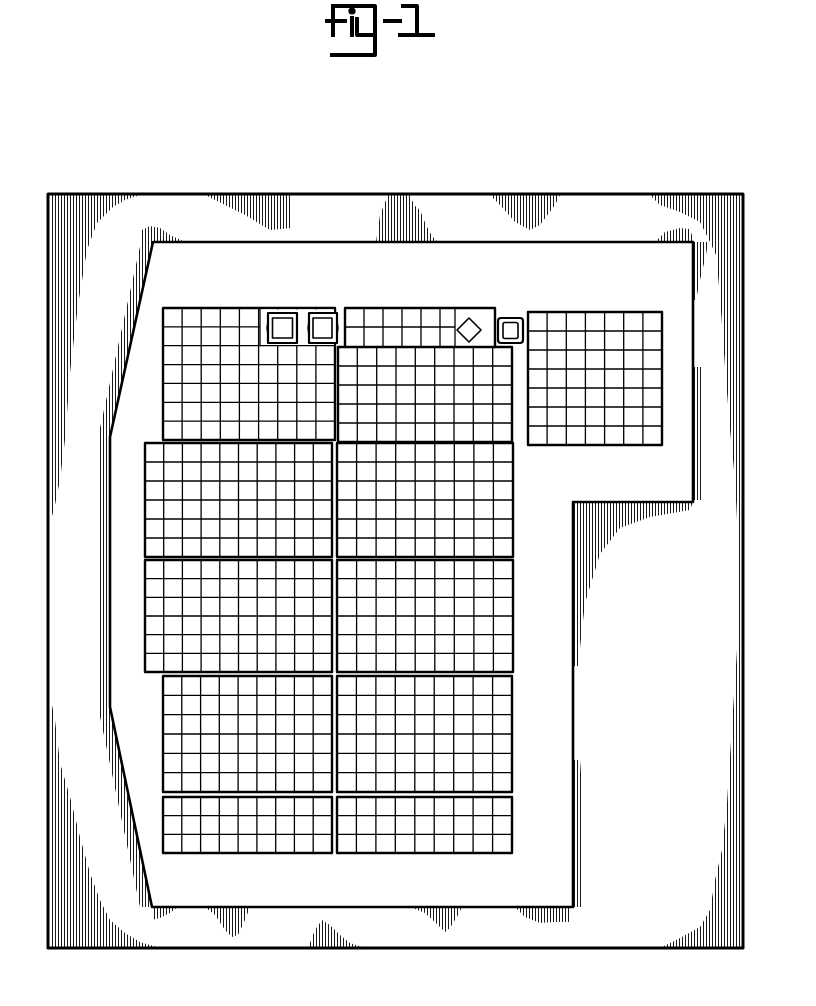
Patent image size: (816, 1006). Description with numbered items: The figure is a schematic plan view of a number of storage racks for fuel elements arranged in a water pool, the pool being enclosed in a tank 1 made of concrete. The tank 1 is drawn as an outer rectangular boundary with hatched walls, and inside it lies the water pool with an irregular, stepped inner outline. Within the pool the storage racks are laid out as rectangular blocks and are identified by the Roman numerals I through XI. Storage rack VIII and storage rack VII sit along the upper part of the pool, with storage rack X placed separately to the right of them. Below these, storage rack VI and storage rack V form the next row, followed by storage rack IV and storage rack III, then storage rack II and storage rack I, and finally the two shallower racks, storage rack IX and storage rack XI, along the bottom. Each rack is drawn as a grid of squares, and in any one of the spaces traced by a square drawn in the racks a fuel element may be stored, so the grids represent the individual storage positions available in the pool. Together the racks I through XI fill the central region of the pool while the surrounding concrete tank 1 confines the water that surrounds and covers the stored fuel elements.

The tank 1 is at (128, 213).
The storage rack I is at (424, 734).
The storage rack II is at (247, 734).
The storage rack III is at (425, 616).
The storage rack IV is at (238, 616).
The storage rack V is at (425, 500).
The storage rack VI is at (238, 500).
The storage rack VII is at (425, 375).
The storage rack VIII is at (250, 374).
The storage rack IX is at (247, 825).
The storage rack X is at (595, 378).
The storage rack XI is at (424, 825).